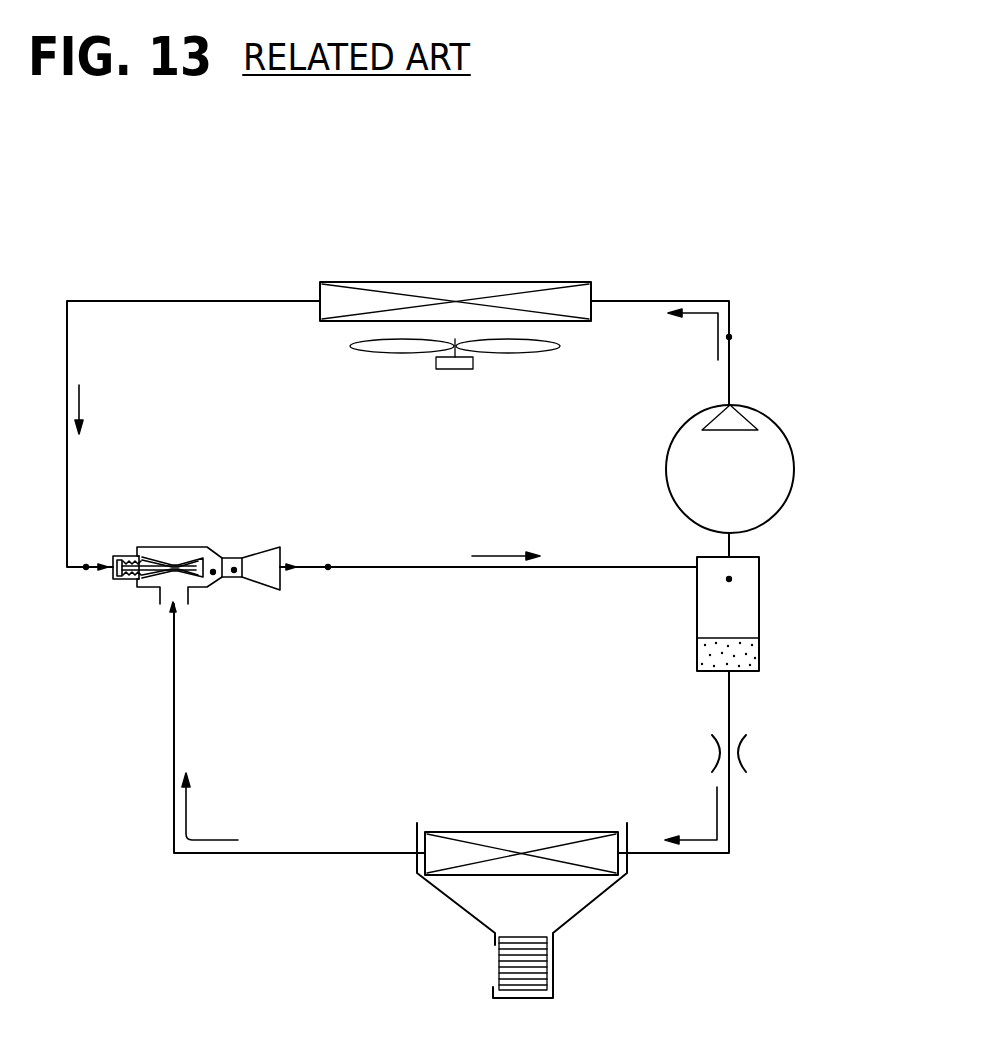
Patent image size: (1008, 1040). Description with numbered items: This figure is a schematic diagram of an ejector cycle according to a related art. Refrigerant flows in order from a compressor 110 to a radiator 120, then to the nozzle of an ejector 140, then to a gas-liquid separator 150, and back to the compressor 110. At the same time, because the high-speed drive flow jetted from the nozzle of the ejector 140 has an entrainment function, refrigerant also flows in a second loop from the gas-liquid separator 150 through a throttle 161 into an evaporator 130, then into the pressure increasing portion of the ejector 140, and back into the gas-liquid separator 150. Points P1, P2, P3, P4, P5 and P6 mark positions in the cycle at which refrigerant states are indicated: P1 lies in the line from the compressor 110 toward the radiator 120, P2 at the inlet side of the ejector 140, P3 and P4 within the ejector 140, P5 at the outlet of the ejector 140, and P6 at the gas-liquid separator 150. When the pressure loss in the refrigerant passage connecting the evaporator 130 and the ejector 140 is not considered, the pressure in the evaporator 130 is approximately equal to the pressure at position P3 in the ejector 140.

The compressor 110 is at (753, 456).
The radiator 120 is at (320, 291).
The evaporator 130 is at (448, 848).
The ejector 140 is at (255, 540).
The gas-liquid separator 150 is at (740, 618).
The throttle 161 is at (745, 750).
The refrigerant state position P1 is at (732, 337).
The refrigerant state position P2 is at (86, 570).
The refrigerant state position P3 is at (213, 575).
The refrigerant state position P4 is at (234, 573).
The refrigerant state position P5 is at (328, 570).
The refrigerant state position P6 is at (732, 578).